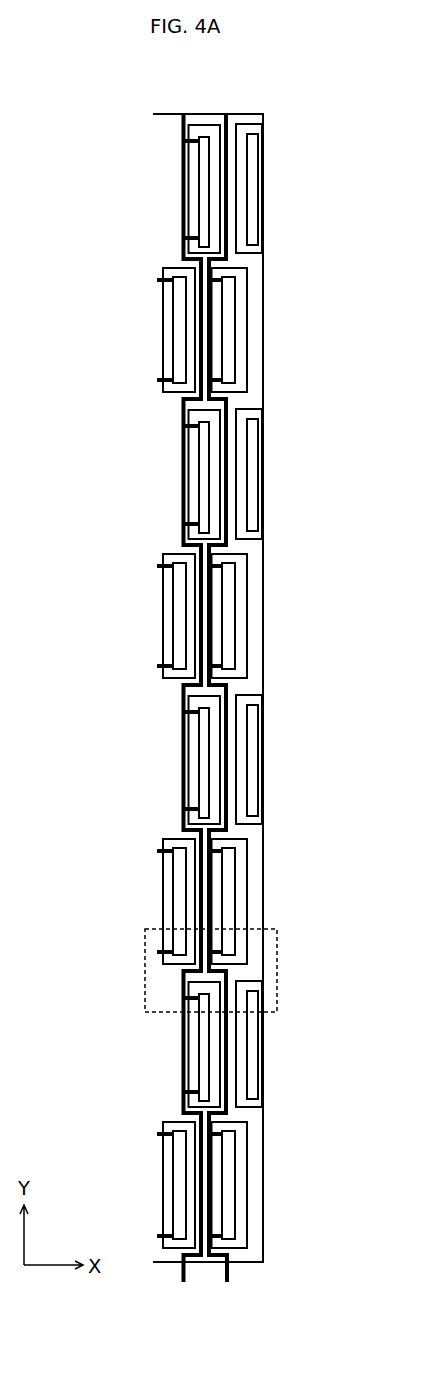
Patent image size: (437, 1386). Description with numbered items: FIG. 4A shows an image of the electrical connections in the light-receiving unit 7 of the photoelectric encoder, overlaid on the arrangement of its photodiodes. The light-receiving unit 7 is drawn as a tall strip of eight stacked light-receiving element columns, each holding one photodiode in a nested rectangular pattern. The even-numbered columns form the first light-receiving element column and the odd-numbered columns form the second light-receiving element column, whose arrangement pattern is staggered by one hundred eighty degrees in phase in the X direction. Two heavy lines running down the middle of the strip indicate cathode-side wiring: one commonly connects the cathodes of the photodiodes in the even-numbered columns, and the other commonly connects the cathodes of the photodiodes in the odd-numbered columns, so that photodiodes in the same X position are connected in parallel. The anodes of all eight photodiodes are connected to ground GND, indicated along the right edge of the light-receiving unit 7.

The light-receiving unit 7 is at (284, 108).
The ground GND is at (253, 1128).